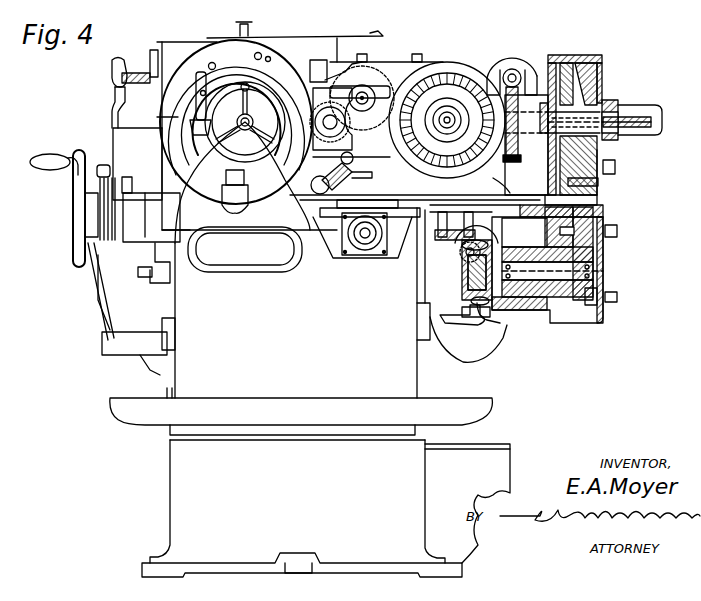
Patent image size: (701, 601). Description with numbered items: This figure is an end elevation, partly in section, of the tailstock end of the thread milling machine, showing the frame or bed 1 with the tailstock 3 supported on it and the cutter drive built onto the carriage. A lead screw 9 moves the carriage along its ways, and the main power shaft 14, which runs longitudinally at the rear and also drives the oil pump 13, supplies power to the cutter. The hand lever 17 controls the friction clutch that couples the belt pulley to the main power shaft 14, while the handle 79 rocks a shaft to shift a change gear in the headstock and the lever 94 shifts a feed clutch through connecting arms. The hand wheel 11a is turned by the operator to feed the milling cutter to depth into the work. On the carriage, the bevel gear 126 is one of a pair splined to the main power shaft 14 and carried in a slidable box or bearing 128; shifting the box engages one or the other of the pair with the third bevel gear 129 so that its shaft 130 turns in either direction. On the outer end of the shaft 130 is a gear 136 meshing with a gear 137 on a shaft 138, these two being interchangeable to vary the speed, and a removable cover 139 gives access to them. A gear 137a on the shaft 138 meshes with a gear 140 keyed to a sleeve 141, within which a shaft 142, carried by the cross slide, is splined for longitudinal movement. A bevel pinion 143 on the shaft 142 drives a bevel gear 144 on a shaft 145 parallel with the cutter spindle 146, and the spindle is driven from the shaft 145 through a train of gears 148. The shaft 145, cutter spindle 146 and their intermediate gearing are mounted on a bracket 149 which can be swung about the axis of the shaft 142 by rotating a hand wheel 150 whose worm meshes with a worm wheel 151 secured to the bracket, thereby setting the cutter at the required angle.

The frame or bed 1 is at (195, 368).
The tailstock 3 is at (197, 210).
The lead screw 9 is at (367, 235).
The hand wheel 11a is at (75, 209).
The oil pump 13 is at (478, 356).
The main power shaft 14 is at (467, 260).
The hand lever 17 is at (95, 297).
The handle 79 is at (115, 86).
The lever 94 is at (112, 71).
The bevel gear 126 is at (458, 257).
The box or bearing 128 is at (472, 313).
The third bevel gear 129 is at (482, 323).
The shaft 130 is at (535, 270).
The gear 136 is at (585, 300).
The gear 137 is at (607, 167).
The gear 137a is at (578, 223).
The shaft 138 is at (600, 200).
The removable cover 139 is at (607, 188).
The gear 140 is at (567, 73).
The sleeve 141 is at (598, 92).
The shaft 142 is at (640, 118).
The bevel pinion 143 is at (510, 165).
The bevel gear 144 is at (449, 100).
The shaft 145 is at (437, 140).
The cutter spindle 146 is at (319, 102).
The train of gears 148 is at (388, 82).
The bracket 149 is at (382, 78).
The hand wheel 150 is at (500, 60).
The worm wheel 151 is at (527, 110).